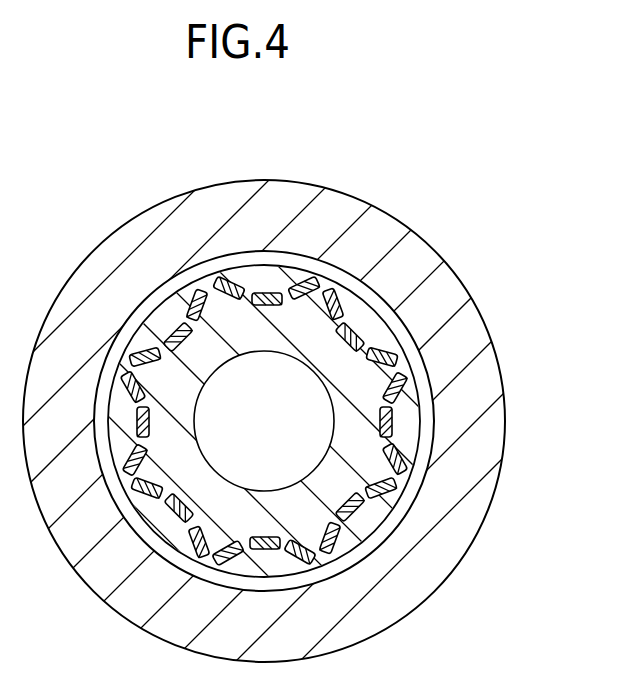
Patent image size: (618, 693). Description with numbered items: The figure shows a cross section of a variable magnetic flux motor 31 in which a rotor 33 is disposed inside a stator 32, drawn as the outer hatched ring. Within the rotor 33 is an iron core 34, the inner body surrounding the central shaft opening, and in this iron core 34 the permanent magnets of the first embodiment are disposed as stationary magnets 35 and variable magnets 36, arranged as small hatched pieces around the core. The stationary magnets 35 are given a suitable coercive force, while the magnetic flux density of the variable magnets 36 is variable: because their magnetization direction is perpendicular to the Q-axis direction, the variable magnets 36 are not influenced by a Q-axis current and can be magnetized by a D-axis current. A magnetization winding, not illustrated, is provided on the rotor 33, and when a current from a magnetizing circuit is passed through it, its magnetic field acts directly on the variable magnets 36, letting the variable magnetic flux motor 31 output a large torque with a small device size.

The variable magnetic flux motor 31 is at (448, 184).
The stator 32 is at (492, 500).
The rotor 33 is at (308, 365).
The iron core 34 is at (378, 340).
The stationary magnets 35 is at (418, 347).
The variable magnets 36 is at (394, 400).